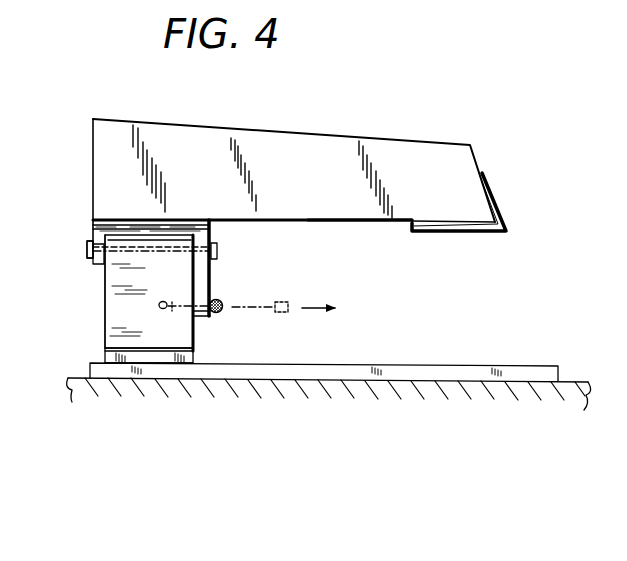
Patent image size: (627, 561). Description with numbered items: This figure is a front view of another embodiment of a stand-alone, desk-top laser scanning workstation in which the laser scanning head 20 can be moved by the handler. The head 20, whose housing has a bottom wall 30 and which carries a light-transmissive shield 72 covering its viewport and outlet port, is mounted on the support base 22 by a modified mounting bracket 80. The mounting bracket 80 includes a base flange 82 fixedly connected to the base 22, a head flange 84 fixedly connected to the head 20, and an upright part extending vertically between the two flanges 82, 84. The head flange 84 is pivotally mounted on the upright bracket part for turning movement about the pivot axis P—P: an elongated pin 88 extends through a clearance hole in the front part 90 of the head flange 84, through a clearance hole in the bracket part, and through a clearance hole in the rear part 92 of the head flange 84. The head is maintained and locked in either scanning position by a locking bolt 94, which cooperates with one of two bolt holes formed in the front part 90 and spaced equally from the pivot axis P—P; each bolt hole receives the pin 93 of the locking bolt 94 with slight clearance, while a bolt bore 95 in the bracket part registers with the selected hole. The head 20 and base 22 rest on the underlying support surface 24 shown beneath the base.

The head 20 is at (401, 111).
The shield 72 is at (492, 211).
The bottom wall 30 is at (355, 215).
The head flange 84 is at (205, 222).
The front part 90 is at (198, 273).
The pivot axis P is at (79, 241).
The mounting bracket 80 is at (88, 315).
The pin 88 is at (110, 243).
The rear part 92 is at (89, 258).
The locking bolt 94 is at (210, 307).
The bolt bore 95 is at (156, 293).
The pin of the locking bolt 93 is at (170, 301).
The base flange 82 is at (180, 350).
The support base 22 is at (416, 358).
The ground support 24 is at (562, 374).